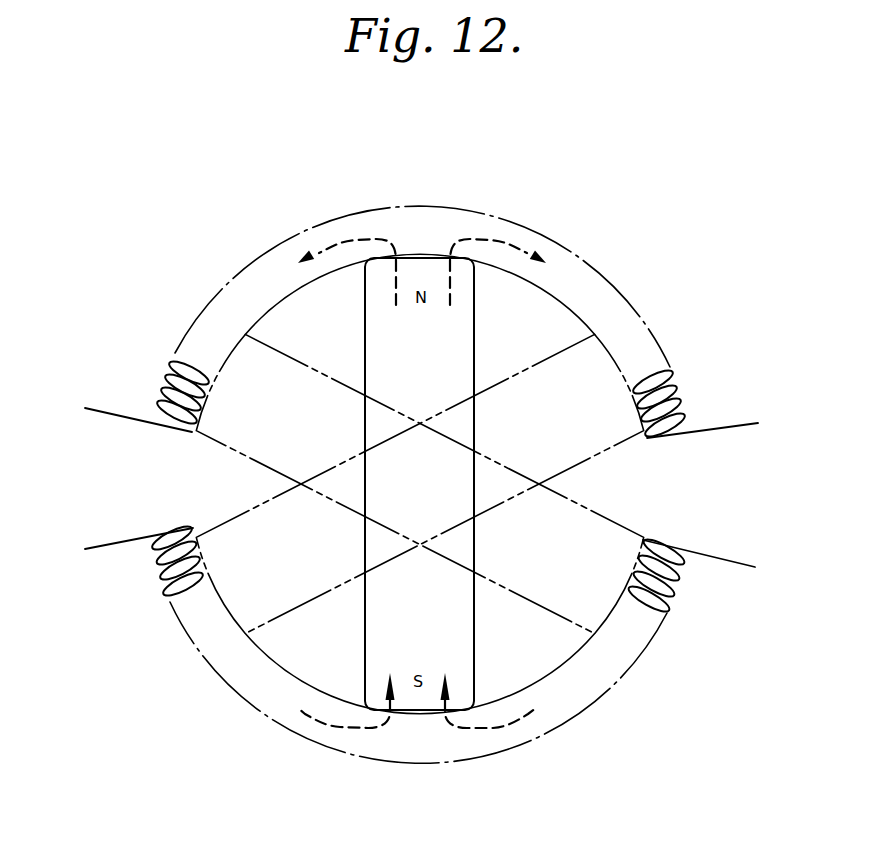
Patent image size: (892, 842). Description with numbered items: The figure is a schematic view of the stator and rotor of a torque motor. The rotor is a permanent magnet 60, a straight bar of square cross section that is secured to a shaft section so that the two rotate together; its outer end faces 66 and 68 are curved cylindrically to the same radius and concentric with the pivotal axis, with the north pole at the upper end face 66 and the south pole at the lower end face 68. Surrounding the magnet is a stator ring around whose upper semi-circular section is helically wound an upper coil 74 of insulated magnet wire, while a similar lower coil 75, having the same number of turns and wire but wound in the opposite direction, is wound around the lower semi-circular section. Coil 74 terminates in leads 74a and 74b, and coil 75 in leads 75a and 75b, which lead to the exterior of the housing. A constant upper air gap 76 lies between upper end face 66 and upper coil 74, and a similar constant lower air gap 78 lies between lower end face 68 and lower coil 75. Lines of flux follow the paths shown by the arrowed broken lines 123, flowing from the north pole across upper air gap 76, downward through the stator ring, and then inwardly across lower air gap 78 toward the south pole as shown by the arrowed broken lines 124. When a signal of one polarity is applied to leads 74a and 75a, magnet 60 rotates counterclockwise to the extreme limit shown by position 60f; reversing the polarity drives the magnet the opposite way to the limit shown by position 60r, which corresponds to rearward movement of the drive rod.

The permanent magnet 60 is at (410, 370).
The forward limit position of permanent magnet 60f is at (339, 383).
The rearward limit position of permanent magnet 60r is at (549, 358).
The upper magnet end face 66 is at (440, 260).
The lower magnet end face 68 is at (434, 710).
The upper coil 74 is at (171, 365).
The lead of upper coil 74a is at (106, 414).
The lead of upper coil 74b is at (727, 434).
The lower coil 75 is at (164, 594).
The lead of lower coil 75a is at (113, 541).
The lead of lower coil 75b is at (728, 558).
The upper air gap 76 is at (417, 254).
The lower air gap 78 is at (410, 716).
The arrowed broken lines representing flux paths 123 is at (338, 246).
The arrowed broken lines representing flux paths 124 is at (323, 722).